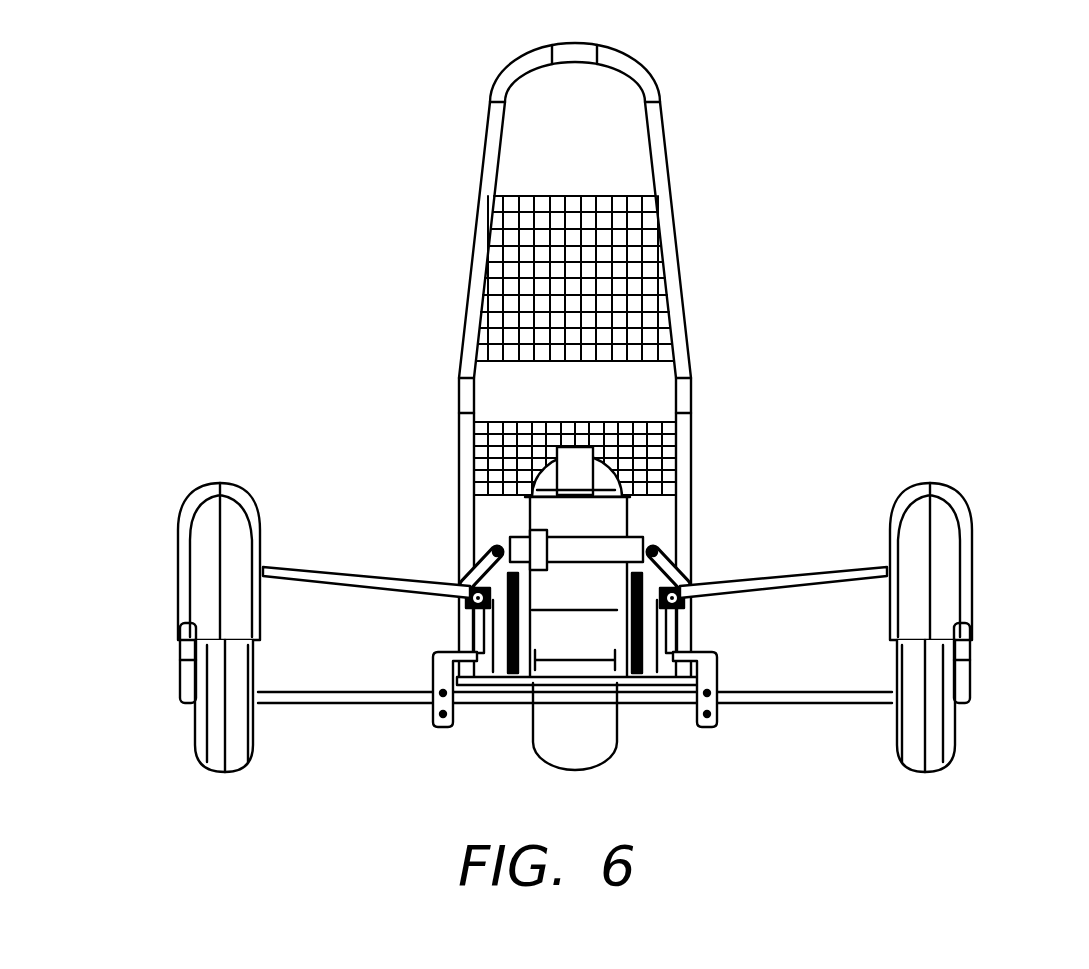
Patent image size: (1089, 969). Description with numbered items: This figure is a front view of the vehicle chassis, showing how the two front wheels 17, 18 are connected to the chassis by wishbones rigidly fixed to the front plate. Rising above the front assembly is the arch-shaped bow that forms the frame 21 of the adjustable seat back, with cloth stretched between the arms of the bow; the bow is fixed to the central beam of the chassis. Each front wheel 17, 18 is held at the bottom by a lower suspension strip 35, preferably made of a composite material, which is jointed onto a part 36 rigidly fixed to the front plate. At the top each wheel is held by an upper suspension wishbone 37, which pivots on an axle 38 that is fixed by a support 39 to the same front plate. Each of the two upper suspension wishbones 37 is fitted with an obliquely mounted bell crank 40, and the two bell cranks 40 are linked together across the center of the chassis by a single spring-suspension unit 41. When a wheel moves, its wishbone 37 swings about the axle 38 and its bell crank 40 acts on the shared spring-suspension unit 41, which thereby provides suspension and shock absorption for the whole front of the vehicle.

The front wheel 17 is at (205, 748).
The front wheel 18 is at (940, 755).
The frame 21 is at (685, 336).
The lower suspension strip 35 is at (313, 707).
The part 36 is at (430, 705).
The upper suspension wishbone 37 is at (328, 577).
The axle 38 is at (460, 608).
The support 39 is at (478, 562).
The bell crank 40 is at (470, 550).
The spring-suspension unit 41 is at (580, 570).